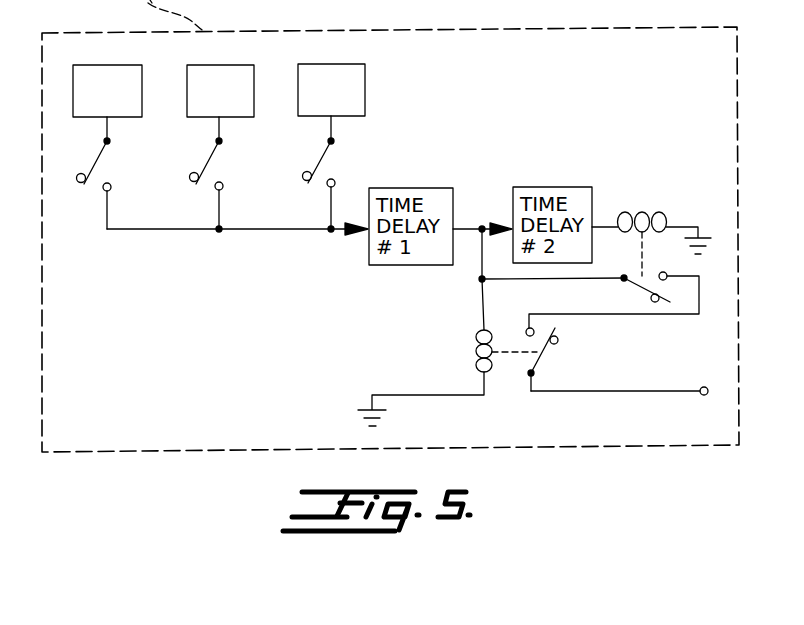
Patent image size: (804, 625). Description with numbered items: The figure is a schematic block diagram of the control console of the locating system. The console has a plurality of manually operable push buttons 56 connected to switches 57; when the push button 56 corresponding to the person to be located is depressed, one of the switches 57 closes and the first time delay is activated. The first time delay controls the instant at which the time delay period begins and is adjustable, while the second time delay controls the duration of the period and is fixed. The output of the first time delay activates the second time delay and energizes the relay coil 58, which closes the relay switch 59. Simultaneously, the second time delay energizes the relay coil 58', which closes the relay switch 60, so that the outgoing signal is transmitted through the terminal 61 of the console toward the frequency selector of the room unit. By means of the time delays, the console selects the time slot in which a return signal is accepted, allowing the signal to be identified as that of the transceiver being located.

The push buttons 56 is at (187, 75).
The switches 57 is at (98, 158).
The relay coil 58 is at (447, 378).
The relay coil 58' is at (651, 222).
The relay switch 59 is at (540, 368).
The relay switch 60 is at (630, 287).
The terminal 61 is at (703, 386).